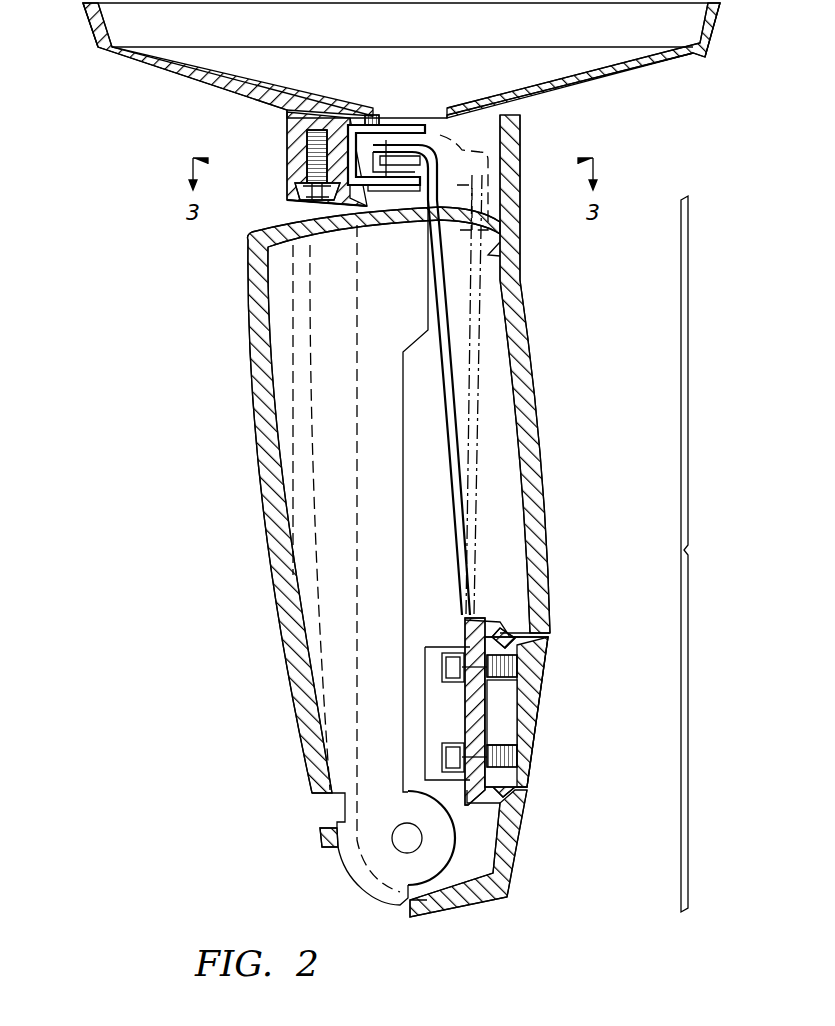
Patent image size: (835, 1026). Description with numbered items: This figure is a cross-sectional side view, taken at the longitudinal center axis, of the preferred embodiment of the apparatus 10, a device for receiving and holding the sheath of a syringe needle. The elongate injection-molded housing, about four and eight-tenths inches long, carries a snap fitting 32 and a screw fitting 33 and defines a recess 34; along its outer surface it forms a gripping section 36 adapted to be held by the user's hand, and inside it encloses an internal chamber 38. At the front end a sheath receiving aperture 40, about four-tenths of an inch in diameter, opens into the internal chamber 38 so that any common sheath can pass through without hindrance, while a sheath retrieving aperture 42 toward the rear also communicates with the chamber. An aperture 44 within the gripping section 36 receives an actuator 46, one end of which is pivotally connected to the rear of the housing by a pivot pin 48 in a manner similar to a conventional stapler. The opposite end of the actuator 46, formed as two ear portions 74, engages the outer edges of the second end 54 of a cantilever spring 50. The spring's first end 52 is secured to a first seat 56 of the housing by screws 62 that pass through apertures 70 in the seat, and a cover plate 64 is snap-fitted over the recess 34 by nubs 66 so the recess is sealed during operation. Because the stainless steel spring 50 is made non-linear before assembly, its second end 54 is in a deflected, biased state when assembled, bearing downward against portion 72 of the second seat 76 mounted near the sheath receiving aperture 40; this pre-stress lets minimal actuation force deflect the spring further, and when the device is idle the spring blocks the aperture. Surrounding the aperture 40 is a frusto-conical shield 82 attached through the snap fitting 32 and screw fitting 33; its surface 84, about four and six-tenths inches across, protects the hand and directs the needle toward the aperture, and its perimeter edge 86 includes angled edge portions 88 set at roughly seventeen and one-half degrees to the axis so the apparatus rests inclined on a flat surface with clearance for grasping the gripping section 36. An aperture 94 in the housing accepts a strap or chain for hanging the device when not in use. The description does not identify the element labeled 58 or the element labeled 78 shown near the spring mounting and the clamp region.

The apparatus 10 is at (180, 591).
The snap fitting 32 is at (524, 250).
The screw fitting 33 is at (300, 190).
The recess 34 is at (516, 716).
The gripping section 36 is at (688, 549).
The internal chamber 38 is at (394, 476).
The sheath receiving aperture 40 is at (447, 115).
The sheath retrieving aperture 42 is at (341, 862).
The aperture 44 is at (312, 339).
The actuator 46 is at (260, 472).
The pivot pin 48 is at (402, 850).
The cantilever spring 50 is at (460, 428).
The first end 52 is at (440, 709).
The second end 54 is at (400, 178).
The first seat 56 is at (464, 792).
The plate 58 is at (460, 618).
The screws 62 is at (520, 668).
The cover plate 64 is at (548, 650).
The nubs 66 is at (502, 630).
The apertures 70 is at (462, 651).
The portion 72 is at (418, 168).
The ear portions 74 is at (440, 147).
The second seat 76 is at (366, 130).
The bushing 78 is at (380, 117).
The shield 82 is at (722, 95).
The surface 84 is at (532, 74).
The perimeter edge 86 is at (622, 92).
The angled edge portions 88 is at (93, 25).
The aperture 94 is at (312, 808).